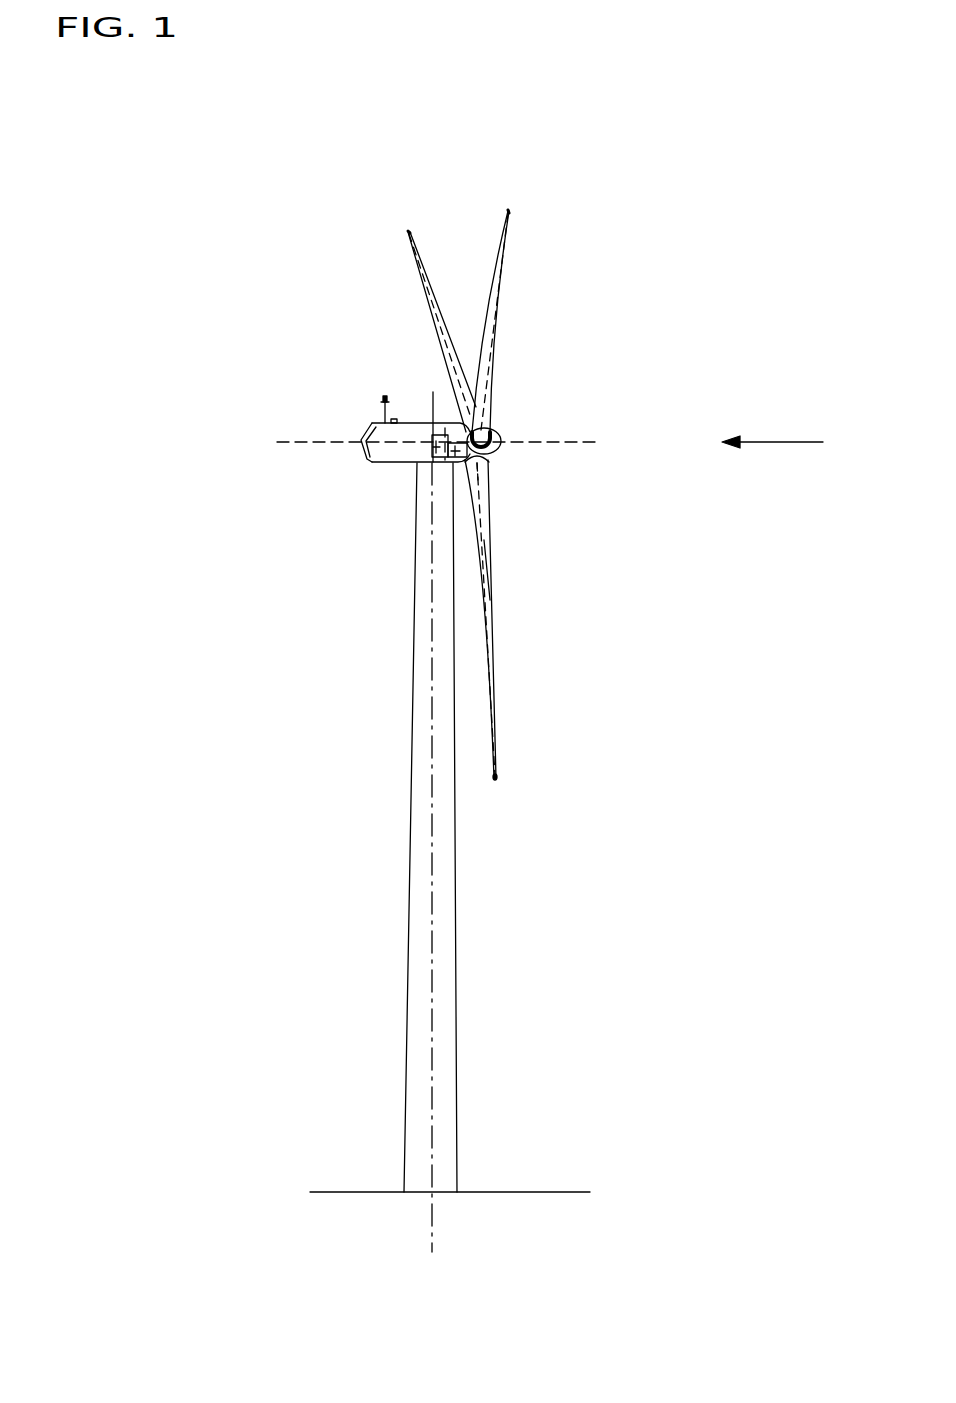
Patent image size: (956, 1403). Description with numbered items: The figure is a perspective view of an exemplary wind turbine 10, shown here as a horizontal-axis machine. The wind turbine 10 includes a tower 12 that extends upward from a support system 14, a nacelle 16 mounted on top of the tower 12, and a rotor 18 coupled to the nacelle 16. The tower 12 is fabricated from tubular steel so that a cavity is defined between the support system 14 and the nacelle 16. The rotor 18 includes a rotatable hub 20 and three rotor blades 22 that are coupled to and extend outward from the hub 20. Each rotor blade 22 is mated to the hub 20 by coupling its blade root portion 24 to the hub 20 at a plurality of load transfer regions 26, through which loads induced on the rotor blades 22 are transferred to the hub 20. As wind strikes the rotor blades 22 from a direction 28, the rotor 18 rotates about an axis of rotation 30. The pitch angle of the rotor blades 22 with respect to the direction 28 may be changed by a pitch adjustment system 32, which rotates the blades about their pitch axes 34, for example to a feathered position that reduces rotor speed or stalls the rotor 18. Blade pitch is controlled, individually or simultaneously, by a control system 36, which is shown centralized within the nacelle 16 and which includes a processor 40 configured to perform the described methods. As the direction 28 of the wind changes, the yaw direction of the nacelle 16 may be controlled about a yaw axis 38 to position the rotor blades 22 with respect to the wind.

The wind turbine 10 is at (200, 236).
The tower 12 is at (408, 978).
The support system 14 is at (365, 1192).
The nacelle 16 is at (390, 463).
The rotor 18 is at (506, 350).
The rotatable hub 20 is at (497, 435).
The rotor blade 22 is at (420, 297).
The blade root portion 24 is at (488, 543).
The load transfer regions 26 is at (483, 460).
The direction 28 is at (790, 442).
The axis of rotation 30 is at (567, 442).
The pitch adjustment system 32 is at (463, 483).
The pitch axes 34 is at (405, 231).
The control system 36 is at (440, 463).
The yaw axis 38 is at (431, 870).
The processor 40 is at (445, 428).